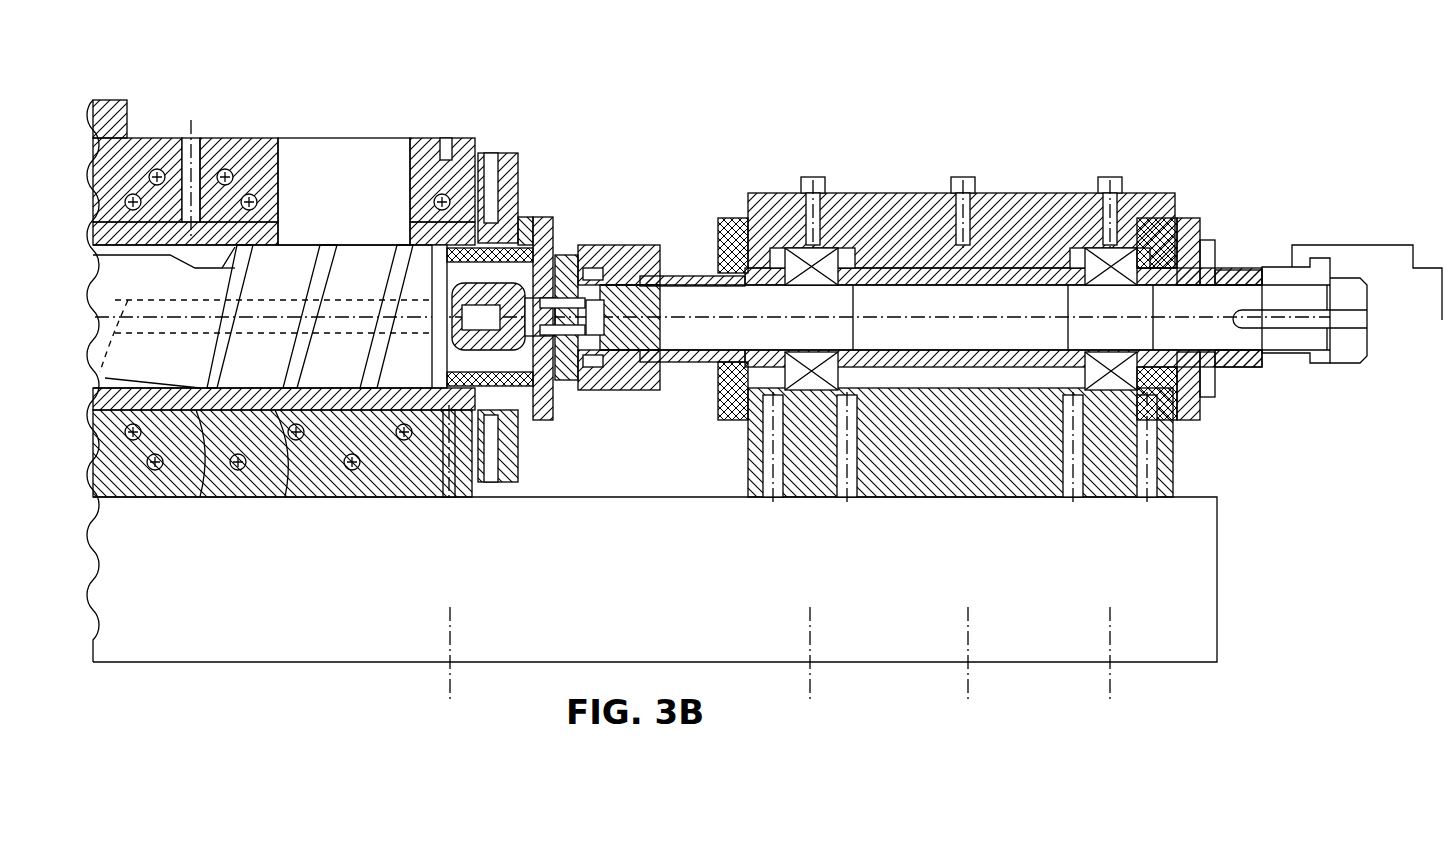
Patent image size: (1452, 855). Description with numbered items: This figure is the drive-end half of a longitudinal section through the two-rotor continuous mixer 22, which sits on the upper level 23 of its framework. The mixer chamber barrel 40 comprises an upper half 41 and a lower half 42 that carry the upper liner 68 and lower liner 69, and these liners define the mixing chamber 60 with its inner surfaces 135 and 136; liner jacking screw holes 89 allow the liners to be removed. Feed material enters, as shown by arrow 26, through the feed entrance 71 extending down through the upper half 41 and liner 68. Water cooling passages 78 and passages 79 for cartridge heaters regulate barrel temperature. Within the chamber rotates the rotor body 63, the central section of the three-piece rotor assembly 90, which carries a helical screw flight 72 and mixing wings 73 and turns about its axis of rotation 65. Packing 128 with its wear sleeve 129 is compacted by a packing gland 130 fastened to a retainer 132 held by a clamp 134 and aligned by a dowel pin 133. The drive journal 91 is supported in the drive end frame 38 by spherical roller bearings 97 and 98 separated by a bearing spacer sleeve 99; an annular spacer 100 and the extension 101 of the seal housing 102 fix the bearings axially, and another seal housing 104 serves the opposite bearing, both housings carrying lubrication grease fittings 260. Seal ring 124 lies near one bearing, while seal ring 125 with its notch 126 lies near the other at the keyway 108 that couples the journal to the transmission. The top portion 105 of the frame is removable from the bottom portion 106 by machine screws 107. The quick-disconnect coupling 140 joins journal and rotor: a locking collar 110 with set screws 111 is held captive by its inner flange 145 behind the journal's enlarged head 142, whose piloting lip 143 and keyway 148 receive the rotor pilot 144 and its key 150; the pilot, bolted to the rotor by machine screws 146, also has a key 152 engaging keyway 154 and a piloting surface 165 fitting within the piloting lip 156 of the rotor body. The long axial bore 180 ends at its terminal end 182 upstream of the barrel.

The two-rotor continuous mixer 22 is at (1110, 60).
The upper level 23 is at (614, 611).
The arrow 26 is at (348, 130).
The drive end frame 38 is at (1062, 180).
The mixer chamber barrel 40 is at (240, 132).
The upper half 41 is at (150, 135).
The lower half 42 is at (332, 492).
The mixing chamber 60 is at (290, 415).
The rotor body 63 is at (154, 364).
The axis of rotation 65 is at (262, 328).
The upper liner 68 is at (275, 235).
The lower liner 69 is at (210, 420).
The feed entrance 71 is at (400, 175).
The helical screw flight 72 is at (302, 342).
The mixing wings 73 is at (122, 258).
The water cooling passages 78 is at (135, 194).
The passages for cartridge heaters 79 is at (233, 178).
The liner jacking screw holes 89 is at (193, 148).
The three-piece rotor assembly 90 is at (1288, 368).
The drive journal 91 is at (936, 303).
The spherical roller bearing 97 is at (842, 250).
The spherical roller bearing 98 is at (1152, 220).
The bearing spacer sleeve 99 is at (1000, 262).
The annular spacer 100 is at (1082, 248).
The extension 101 is at (1180, 200).
The seal housing 102 is at (1216, 238).
The seal housing 104 is at (730, 216).
The top portion 105 is at (920, 210).
The bottom portion 106 is at (968, 450).
The machine screws 107 is at (815, 177).
The keyway 108 is at (1330, 368).
The locking collar 110 is at (618, 258).
The set screws 111 is at (600, 280).
The seal ring 124 is at (715, 380).
The seal ring 125 is at (1218, 372).
The notch 126 is at (1245, 370).
The packing 128 is at (428, 262).
The packing seal wear sleeve 129 is at (432, 288).
The packing gland 130 is at (545, 225).
The packing gland retainer 132 is at (527, 235).
The dowel pin 133 is at (500, 485).
The clamp 134 is at (505, 160).
The inner surfaces 135 is at (306, 376).
The inner surface 136 is at (206, 283).
The quick-disconnect coupling 140 is at (622, 150).
The enlarged head 142 is at (620, 390).
The piloting lip 143 is at (640, 262).
The rotor pilot 144 is at (503, 308).
The inner flange 145 is at (652, 282).
The machine screws 146 is at (557, 330).
The keyway 148 is at (682, 332).
The key 150 is at (682, 302).
The key 152 is at (568, 382).
The keyway 154 is at (555, 395).
The piloting lip 156 is at (566, 290).
The piloting surface 165 is at (600, 400).
The axial bore 180 is at (438, 338).
The terminal end 182 is at (447, 380).
The lubrication grease fittings 260 is at (755, 420).